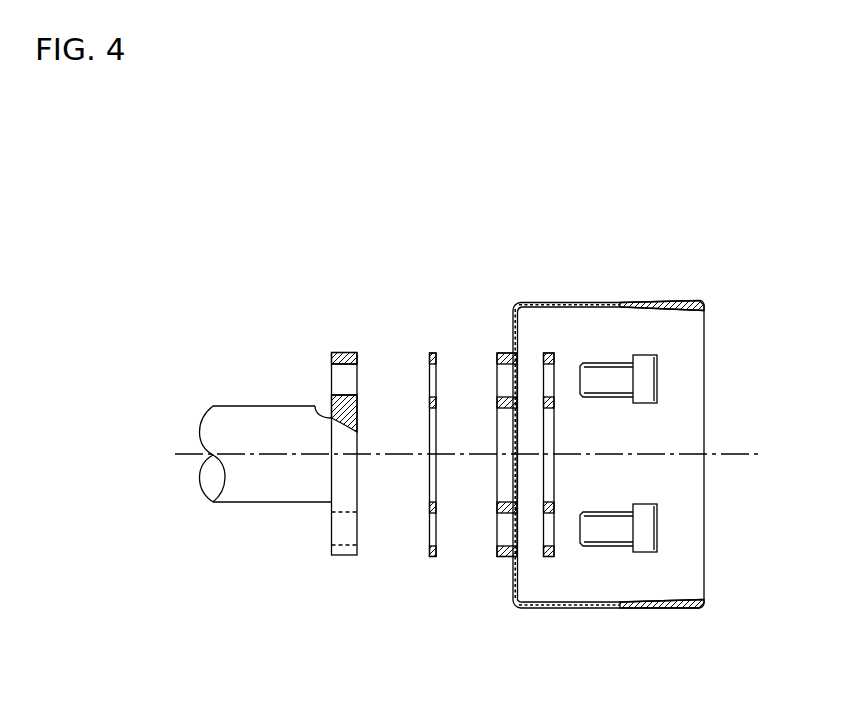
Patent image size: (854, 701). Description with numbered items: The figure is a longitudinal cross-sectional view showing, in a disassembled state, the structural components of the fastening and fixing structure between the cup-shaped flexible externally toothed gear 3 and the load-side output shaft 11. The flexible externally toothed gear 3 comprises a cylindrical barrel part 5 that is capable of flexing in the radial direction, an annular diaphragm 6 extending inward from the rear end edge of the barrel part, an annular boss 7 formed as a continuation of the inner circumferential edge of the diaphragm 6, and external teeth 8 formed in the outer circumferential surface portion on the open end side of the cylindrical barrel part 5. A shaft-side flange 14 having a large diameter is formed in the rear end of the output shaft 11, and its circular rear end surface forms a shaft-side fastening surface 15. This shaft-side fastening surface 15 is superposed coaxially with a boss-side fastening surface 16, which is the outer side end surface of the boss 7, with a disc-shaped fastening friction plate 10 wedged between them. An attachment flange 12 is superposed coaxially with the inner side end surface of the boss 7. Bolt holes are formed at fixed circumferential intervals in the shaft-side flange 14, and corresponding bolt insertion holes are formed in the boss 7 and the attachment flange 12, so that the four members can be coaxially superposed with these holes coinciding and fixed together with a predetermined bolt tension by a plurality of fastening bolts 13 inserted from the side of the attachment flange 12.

The flexible externally toothed gear 3 is at (682, 276).
The cylindrical barrel part 5 is at (587, 610).
The annular diaphragm 6 is at (513, 580).
The annular boss 7 is at (503, 558).
The external teeth 8 is at (673, 610).
The fastening friction plate 10 is at (432, 337).
The load-side output shaft 11 is at (261, 380).
The attachment flange 12 is at (555, 335).
The fastening bolt 13 is at (678, 380).
The shaft-side flange 14 is at (342, 487).
The shaft-side fastening surface 15 is at (357, 489).
The boss-side fastening surface 16 is at (497, 378).